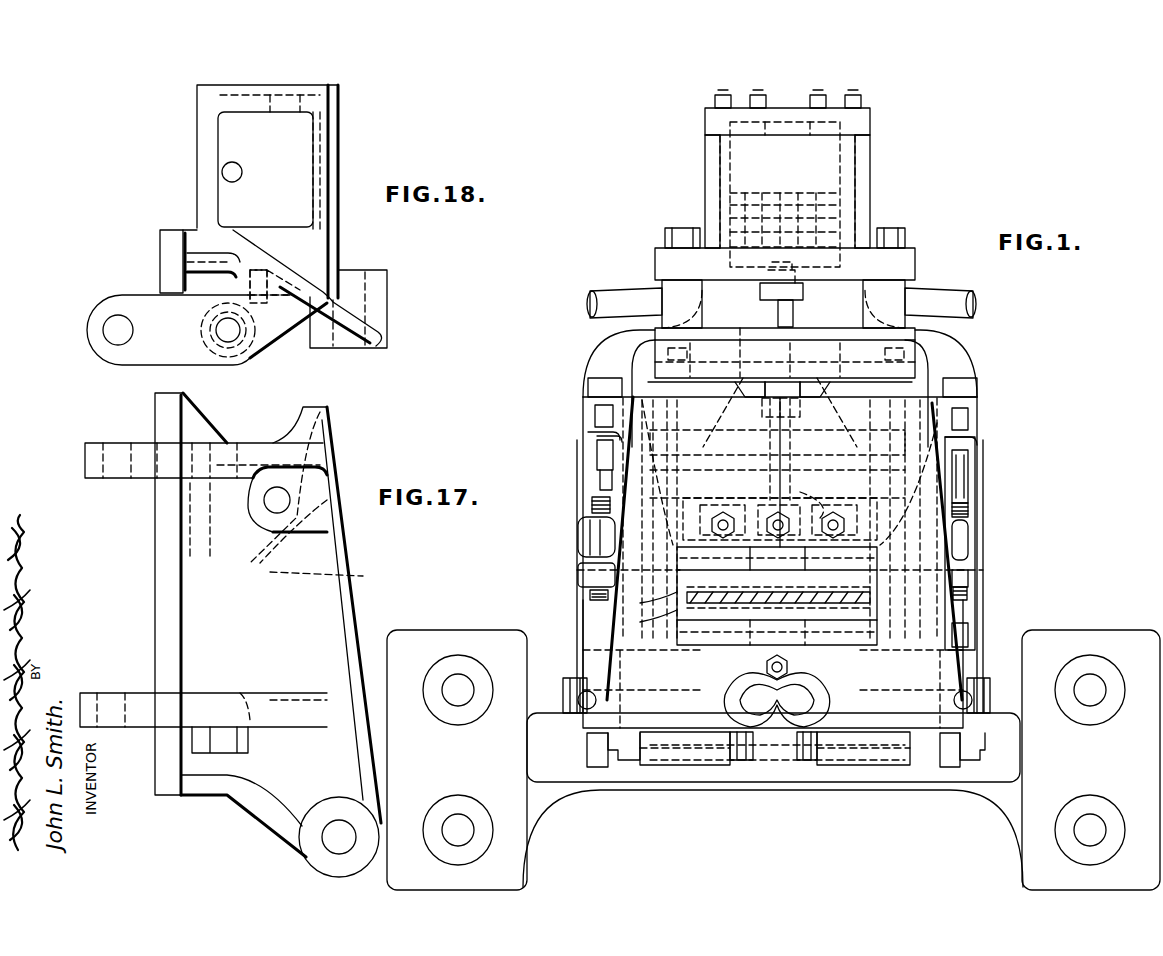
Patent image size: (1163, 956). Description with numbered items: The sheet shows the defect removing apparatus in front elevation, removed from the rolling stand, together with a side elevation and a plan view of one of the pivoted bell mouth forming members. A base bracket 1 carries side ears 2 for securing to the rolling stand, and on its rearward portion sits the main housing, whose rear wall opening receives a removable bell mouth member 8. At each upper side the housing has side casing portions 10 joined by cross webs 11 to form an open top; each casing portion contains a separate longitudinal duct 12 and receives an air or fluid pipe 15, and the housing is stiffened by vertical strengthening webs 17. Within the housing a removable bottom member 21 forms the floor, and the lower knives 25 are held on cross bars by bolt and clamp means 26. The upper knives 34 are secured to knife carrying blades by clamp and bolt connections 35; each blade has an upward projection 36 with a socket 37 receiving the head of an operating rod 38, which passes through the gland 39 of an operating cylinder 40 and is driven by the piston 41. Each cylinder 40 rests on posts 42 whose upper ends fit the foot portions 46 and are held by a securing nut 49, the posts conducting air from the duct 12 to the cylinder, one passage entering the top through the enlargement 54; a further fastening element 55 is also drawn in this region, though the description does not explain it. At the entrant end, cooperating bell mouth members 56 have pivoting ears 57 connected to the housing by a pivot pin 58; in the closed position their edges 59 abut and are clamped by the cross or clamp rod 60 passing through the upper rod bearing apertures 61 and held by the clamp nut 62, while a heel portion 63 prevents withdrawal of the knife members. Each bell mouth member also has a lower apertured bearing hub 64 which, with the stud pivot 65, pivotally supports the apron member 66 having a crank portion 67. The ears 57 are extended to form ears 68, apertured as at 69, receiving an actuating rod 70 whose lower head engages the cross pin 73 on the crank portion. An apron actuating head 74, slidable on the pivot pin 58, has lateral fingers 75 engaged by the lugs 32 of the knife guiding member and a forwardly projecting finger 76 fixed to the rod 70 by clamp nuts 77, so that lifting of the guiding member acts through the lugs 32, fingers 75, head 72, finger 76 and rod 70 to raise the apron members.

In FIG. 1, the base bracket 1 is at (823, 780).
In FIG. 17, the side ears 2 is at (495, 643).
In FIG. 1, the side ears 2 is at (1112, 646).
In FIG. 1, the bell mouth member 8 is at (781, 306).
In FIG. 1, the side casing portions 10 is at (692, 365).
In FIG. 1, the cross webs 11 is at (735, 336).
In FIG. 1, the longitudinal duct 12 is at (668, 353).
In FIG. 1, the air or fluid pipe 15 is at (640, 290).
In FIG. 1, the vertical strengthening webs 17 is at (975, 460).
In FIG. 1, the removable bottom member 21 is at (770, 720).
In FIG. 1, the knives 25 is at (700, 605).
In FIG. 1, the bolt and clamp means 26 is at (779, 700).
In FIG. 1, the lugs 32 is at (588, 553).
In FIG. 1, the upper knives 34 is at (690, 578).
In FIG. 1, the clamp and bolt connections 35 is at (826, 502).
In FIG. 1, the upward projection 36 is at (772, 382).
In FIG. 1, the socket 37 is at (800, 412).
In FIG. 1, the operating rod 38 is at (778, 317).
In FIG. 1, the gland 39 is at (803, 292).
In FIG. 1, the operating cylinder 40 is at (720, 160).
In FIG. 1, the piston 41 is at (762, 200).
In FIG. 1, the posts 42 is at (700, 296).
In FIG. 1, the foot portions 46 is at (655, 258).
In FIG. 1, the securing nut 49 is at (690, 226).
In FIG. 1, the enlargement 54 is at (710, 187).
In FIG. 1, the hex nut 55 is at (716, 512).
In FIG. 18, the bell mouth members 56 is at (336, 168).
In FIG. 17, the bell mouth members 56 is at (335, 595).
In FIG. 18, the pivoting ears 57 is at (152, 356).
In FIG. 17, the pivoting ears 57 is at (148, 466).
In FIG. 1, the pivot pin 58 is at (588, 389).
In FIG. 18, the edges 59 is at (328, 85).
In FIG. 1, the edges 59 is at (770, 433).
In FIG. 1, the cross or clamp rod 60 is at (597, 455).
In FIG. 18, the upper rod bearing apertures 61 is at (306, 256).
In FIG. 17, the upper rod bearing apertures 61 is at (270, 510).
In FIG. 1, the clamp nut 62 is at (608, 472).
In FIG. 18, the heel portion 63 is at (160, 263).
In FIG. 17, the heel portion 63 is at (155, 586).
In FIG. 17, the lower apertured bearing hub 64 is at (348, 820).
In FIG. 1, the lower apertured bearing hub 64 is at (596, 700).
In FIG. 1, the stud pivot 65 is at (563, 693).
In FIG. 1, the apron member 66 is at (700, 640).
In FIG. 1, the crank portion 67 is at (720, 765).
In FIG. 18, the ears 68 is at (267, 335).
In FIG. 17, the ears 68 is at (288, 700).
In FIG. 1, the ears 68 is at (600, 435).
In FIG. 18, the aperture 69 is at (232, 340).
In FIG. 17, the aperture 69 is at (250, 695).
In FIG. 1, the actuating rod 70 is at (962, 485).
In FIG. 1, the head 72 is at (600, 767).
In FIG. 1, the cross pin 73 is at (660, 767).
In FIG. 1, the apron actuating head 74 is at (592, 509).
In FIG. 1, the lateral fingers 75 is at (590, 575).
In FIG. 1, the forwardly projecting finger 76 is at (592, 540).
In FIG. 1, the clamp nuts 77 is at (968, 578).